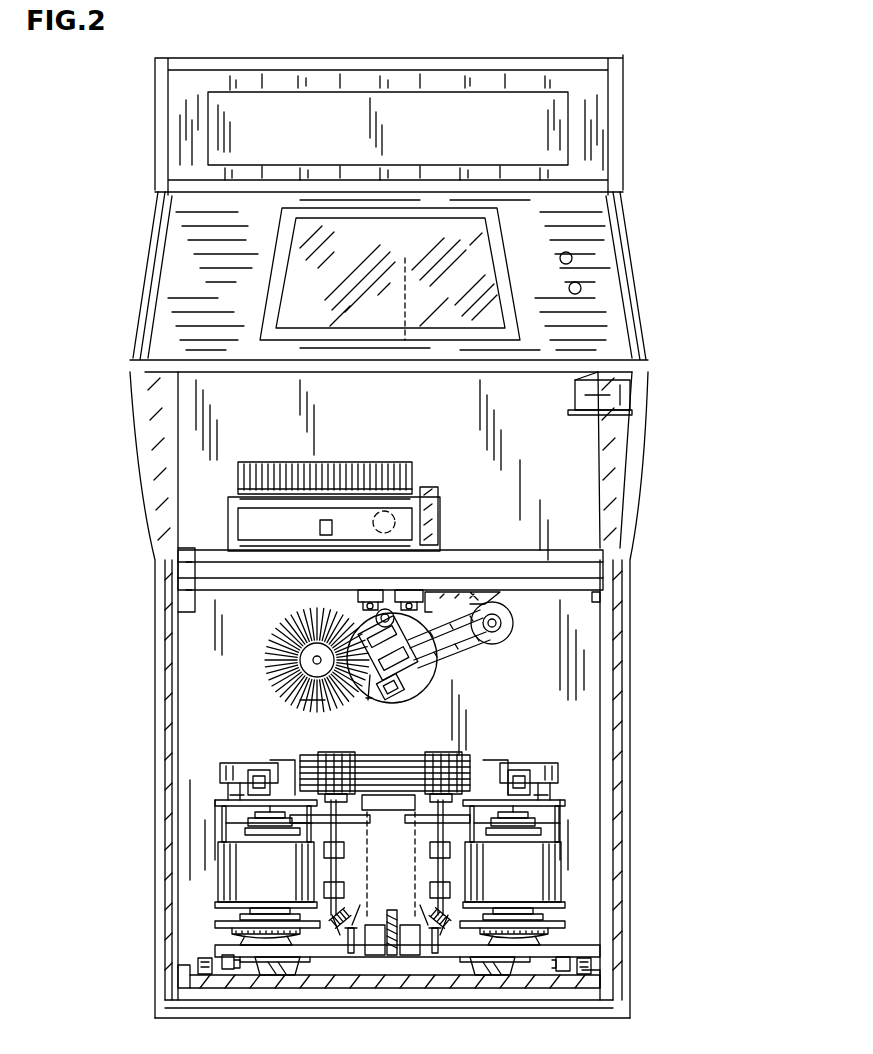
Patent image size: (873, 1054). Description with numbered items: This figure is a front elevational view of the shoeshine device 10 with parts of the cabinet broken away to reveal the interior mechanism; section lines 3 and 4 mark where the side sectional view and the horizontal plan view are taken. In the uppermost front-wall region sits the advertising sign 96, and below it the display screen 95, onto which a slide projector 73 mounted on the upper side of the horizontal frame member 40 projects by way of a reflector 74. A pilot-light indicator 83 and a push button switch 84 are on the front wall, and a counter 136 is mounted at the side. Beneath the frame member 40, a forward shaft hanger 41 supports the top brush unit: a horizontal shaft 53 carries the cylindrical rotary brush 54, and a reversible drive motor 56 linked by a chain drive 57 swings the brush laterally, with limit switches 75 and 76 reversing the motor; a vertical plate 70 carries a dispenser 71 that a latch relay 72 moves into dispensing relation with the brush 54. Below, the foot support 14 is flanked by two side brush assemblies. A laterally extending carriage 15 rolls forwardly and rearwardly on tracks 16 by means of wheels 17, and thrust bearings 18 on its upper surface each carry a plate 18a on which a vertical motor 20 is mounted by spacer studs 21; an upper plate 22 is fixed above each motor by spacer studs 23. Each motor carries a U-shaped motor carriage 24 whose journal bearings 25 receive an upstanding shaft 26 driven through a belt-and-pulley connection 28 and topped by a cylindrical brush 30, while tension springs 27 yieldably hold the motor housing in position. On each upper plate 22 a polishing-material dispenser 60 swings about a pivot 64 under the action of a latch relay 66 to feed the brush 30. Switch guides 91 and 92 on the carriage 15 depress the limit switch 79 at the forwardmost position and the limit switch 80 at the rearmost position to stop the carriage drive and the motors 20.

The section line 3— 3 is at (405, 18).
The section line 4— 4 is at (212, 730).
The shoeshine device 10 is at (643, 252).
The platform or support 14 is at (388, 803).
The carriage 15 is at (425, 950).
The tracks 16 is at (318, 957).
The wheels 17 is at (262, 975).
The rotary supports or thrust bearings 18 is at (228, 938).
The disc or plate 18a is at (218, 927).
The motor or drive means 20 is at (240, 858).
The spacer studs 21 is at (215, 910).
The disc or plate 22 is at (222, 770).
The spacer studs 23 is at (250, 828).
The motor carriage 24 is at (432, 862).
The journal bearings 25 is at (430, 846).
The upstanding shaft 26 is at (405, 818).
The tension springs 27 is at (430, 915).
The belt-and-pulley connection 28 is at (250, 818).
The cylindrical brushes 30 is at (362, 755).
The frame member 40 is at (598, 590).
The forward journal bearing or shaft hanger 41 is at (430, 605).
The shaft 53 is at (310, 712).
The rotary brush 54 is at (268, 658).
The drive motor 56 is at (496, 642).
The chain drive 57 is at (472, 630).
The polishing-material dispenser 60 is at (235, 765).
The pivot 64 is at (235, 790).
The latch relay 66 is at (255, 770).
The vertical plate 70 is at (402, 703).
The dispenser 71 is at (437, 660).
The latch relay 72 is at (414, 690).
The slide projector 73 is at (252, 520).
The reflector 74 is at (440, 522).
The limit switch 75 is at (380, 592).
The limit switch 76 is at (405, 592).
The limit switch 79 is at (200, 968).
The limit switch 80 is at (594, 960).
The pilot-light indicator 83 is at (567, 253).
The push button switch 84 is at (578, 284).
The switch guide 91 is at (222, 958).
The switch guide 92 is at (566, 962).
The display screen 95 is at (390, 274).
The advertising-copy space or sign 96 is at (548, 128).
The counter 136 is at (645, 384).